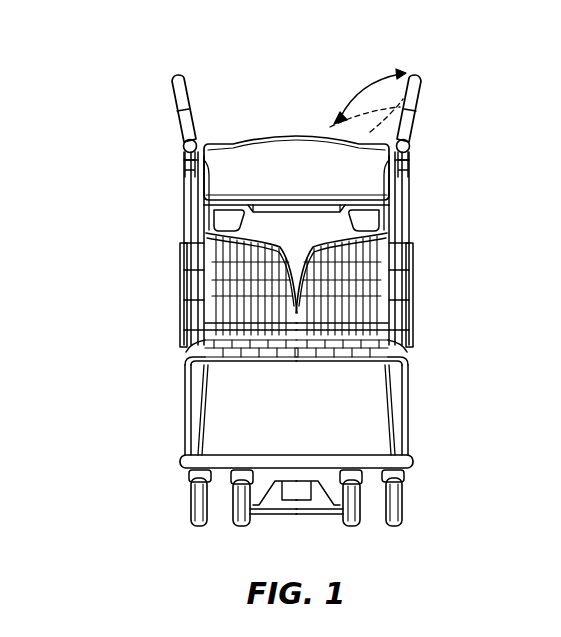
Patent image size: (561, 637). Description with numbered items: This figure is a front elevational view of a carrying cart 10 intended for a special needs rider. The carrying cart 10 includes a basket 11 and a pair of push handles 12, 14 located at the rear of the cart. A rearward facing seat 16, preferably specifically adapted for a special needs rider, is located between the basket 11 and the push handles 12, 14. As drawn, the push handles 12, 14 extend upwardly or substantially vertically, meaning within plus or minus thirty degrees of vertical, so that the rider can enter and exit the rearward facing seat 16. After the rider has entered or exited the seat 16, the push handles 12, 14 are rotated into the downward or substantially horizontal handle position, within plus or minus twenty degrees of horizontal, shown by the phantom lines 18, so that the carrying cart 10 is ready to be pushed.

The carrying cart 10 is at (303, 283).
The basket 11 is at (362, 270).
The push handle 12 is at (426, 114).
The push handle 14 is at (136, 109).
The rearward facing seat 16 is at (262, 168).
The phantom lines 18 is at (402, 95).